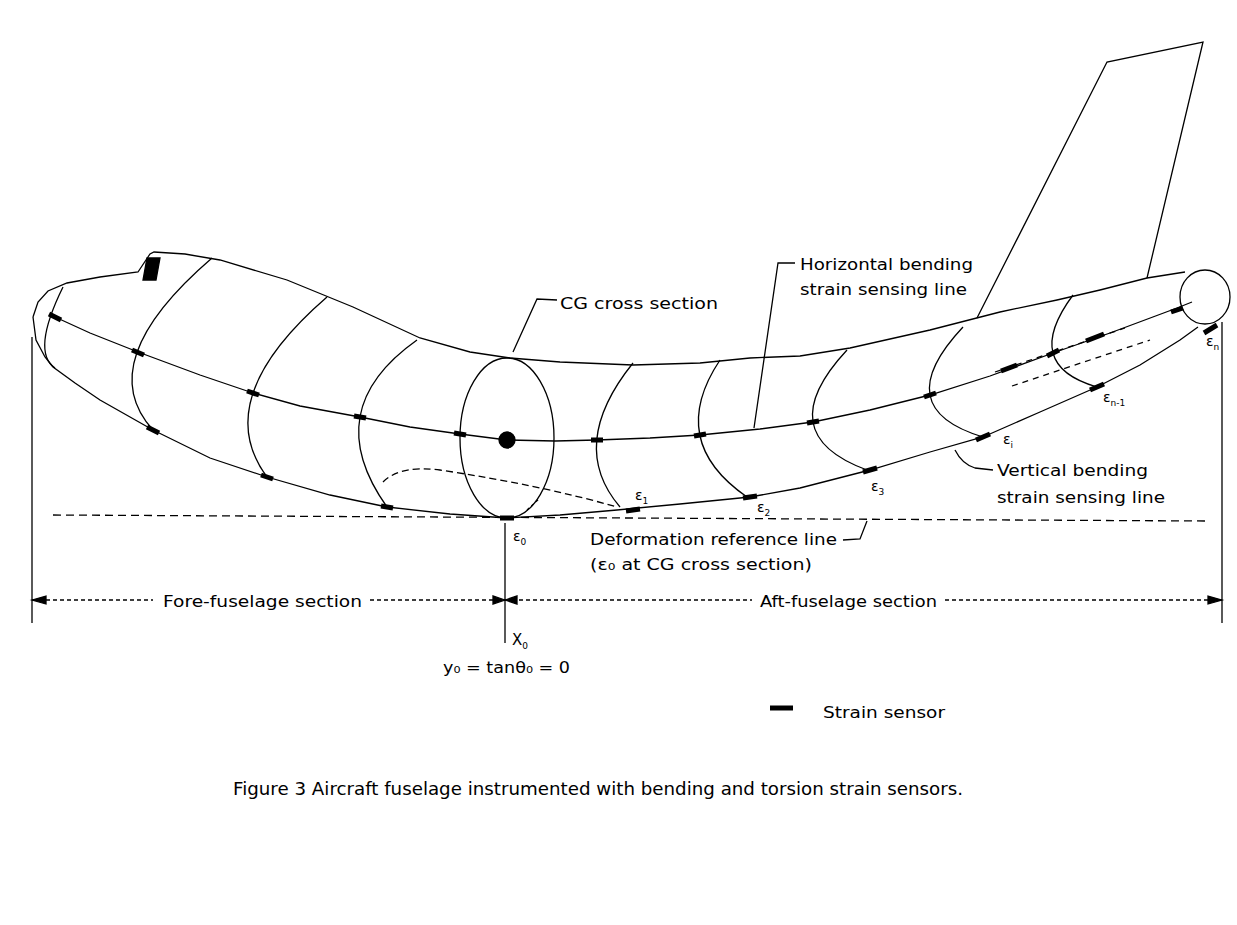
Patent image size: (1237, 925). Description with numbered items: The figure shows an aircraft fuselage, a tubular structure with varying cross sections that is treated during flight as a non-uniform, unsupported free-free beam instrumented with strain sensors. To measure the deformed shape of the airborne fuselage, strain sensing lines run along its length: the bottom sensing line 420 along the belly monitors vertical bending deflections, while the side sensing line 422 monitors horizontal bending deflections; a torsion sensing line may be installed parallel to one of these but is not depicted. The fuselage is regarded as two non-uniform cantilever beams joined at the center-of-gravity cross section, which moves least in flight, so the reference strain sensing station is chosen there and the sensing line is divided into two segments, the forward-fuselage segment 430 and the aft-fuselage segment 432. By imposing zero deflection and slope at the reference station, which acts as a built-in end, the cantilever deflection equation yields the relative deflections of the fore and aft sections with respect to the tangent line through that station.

The bottom sensing line 420 is at (310, 493).
The side sensing line 422 is at (325, 404).
The forward-fuselage segment 430 is at (193, 450).
The aft-fuselage segment 432 is at (889, 463).